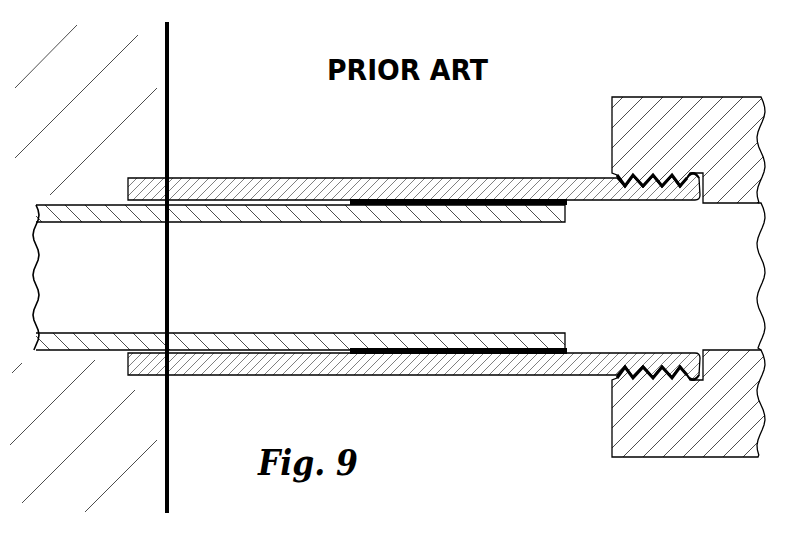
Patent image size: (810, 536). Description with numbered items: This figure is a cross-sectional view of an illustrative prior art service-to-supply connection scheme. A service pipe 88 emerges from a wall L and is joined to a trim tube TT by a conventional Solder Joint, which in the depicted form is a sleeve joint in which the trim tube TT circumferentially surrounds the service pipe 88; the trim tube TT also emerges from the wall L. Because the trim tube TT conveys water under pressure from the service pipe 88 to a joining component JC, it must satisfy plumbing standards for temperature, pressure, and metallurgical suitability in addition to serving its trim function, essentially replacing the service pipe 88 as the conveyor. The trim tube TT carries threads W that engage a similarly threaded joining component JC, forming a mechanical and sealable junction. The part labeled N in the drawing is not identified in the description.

The wall L is at (88, 267).
The trim tube TT is at (453, 190).
The joining component JC is at (628, 160).
The threads W is at (694, 347).
The nut N is at (680, 464).
The service pipe 88 is at (366, 235).
The solder joint Solder Joint is at (570, 203).